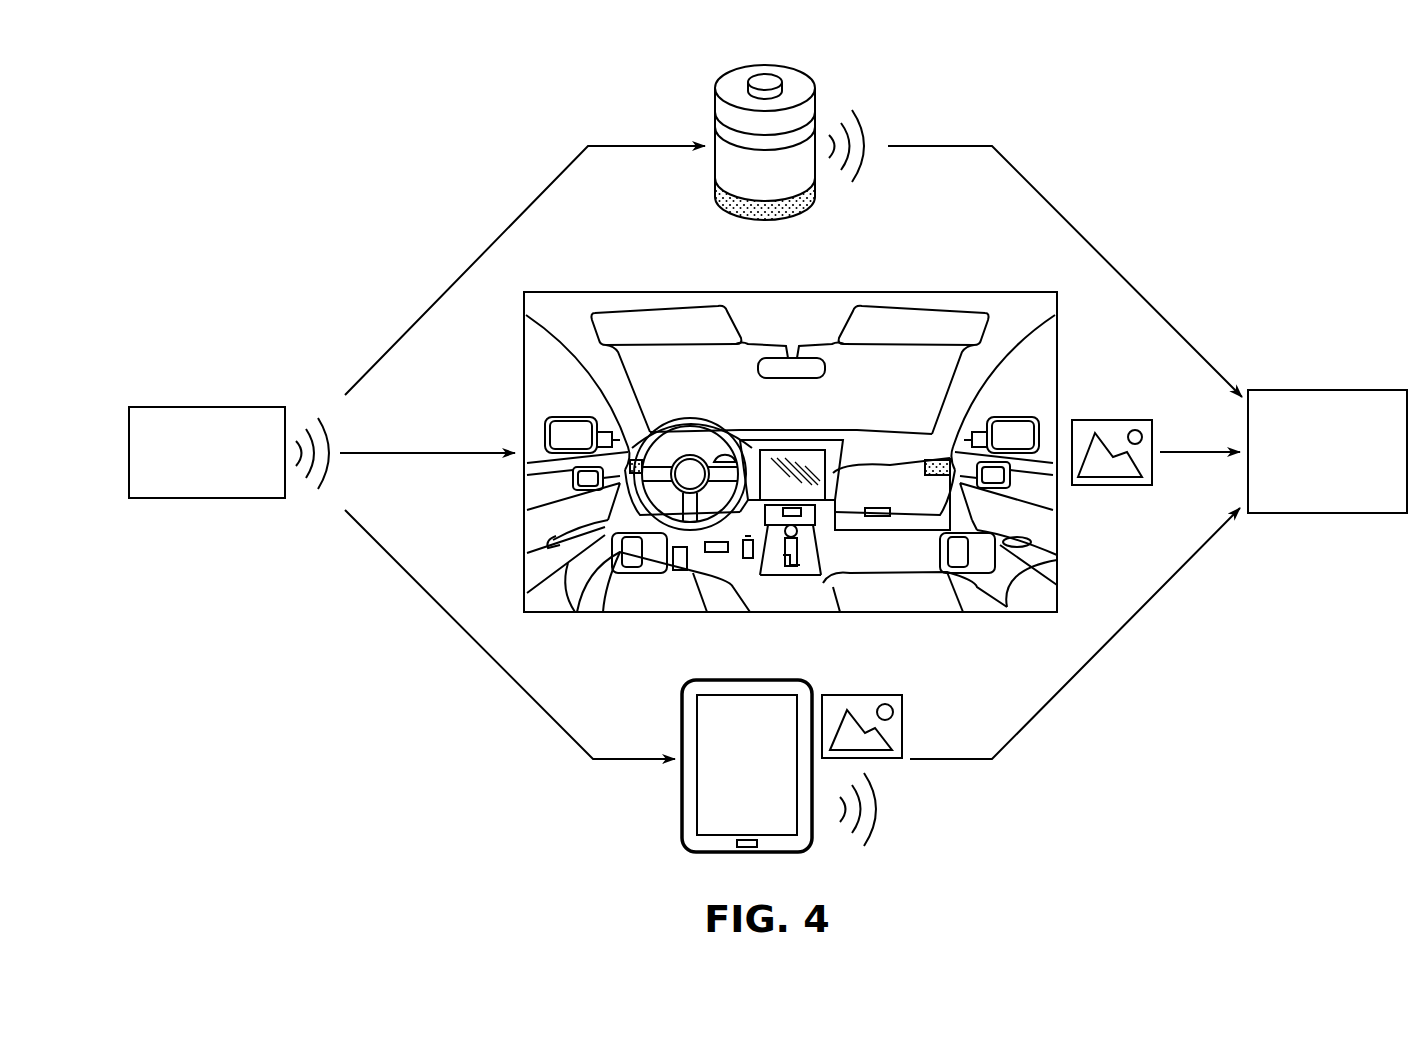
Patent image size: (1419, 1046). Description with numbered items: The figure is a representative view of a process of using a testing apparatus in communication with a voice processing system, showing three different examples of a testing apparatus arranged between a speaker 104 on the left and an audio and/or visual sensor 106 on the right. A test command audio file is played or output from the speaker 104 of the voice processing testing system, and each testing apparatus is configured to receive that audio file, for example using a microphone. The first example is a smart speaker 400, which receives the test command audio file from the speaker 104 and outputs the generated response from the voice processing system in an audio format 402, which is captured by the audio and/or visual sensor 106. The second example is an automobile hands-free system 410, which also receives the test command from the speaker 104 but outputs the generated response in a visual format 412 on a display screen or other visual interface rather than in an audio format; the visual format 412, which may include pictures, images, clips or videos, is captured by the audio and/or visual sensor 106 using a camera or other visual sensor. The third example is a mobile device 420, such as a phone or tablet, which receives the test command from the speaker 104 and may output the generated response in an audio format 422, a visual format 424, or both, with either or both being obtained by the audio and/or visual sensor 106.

The speaker 104 is at (205, 407).
The smart speaker 400 is at (715, 128).
The audio format 402 is at (886, 117).
The automobile hands-free system 410 is at (910, 292).
The visual format 412 is at (1113, 420).
The audio and/or visual sensor 106 is at (1328, 390).
The mobile device 420 is at (682, 797).
The audio format 422 is at (899, 821).
The visual format 424 is at (902, 723).